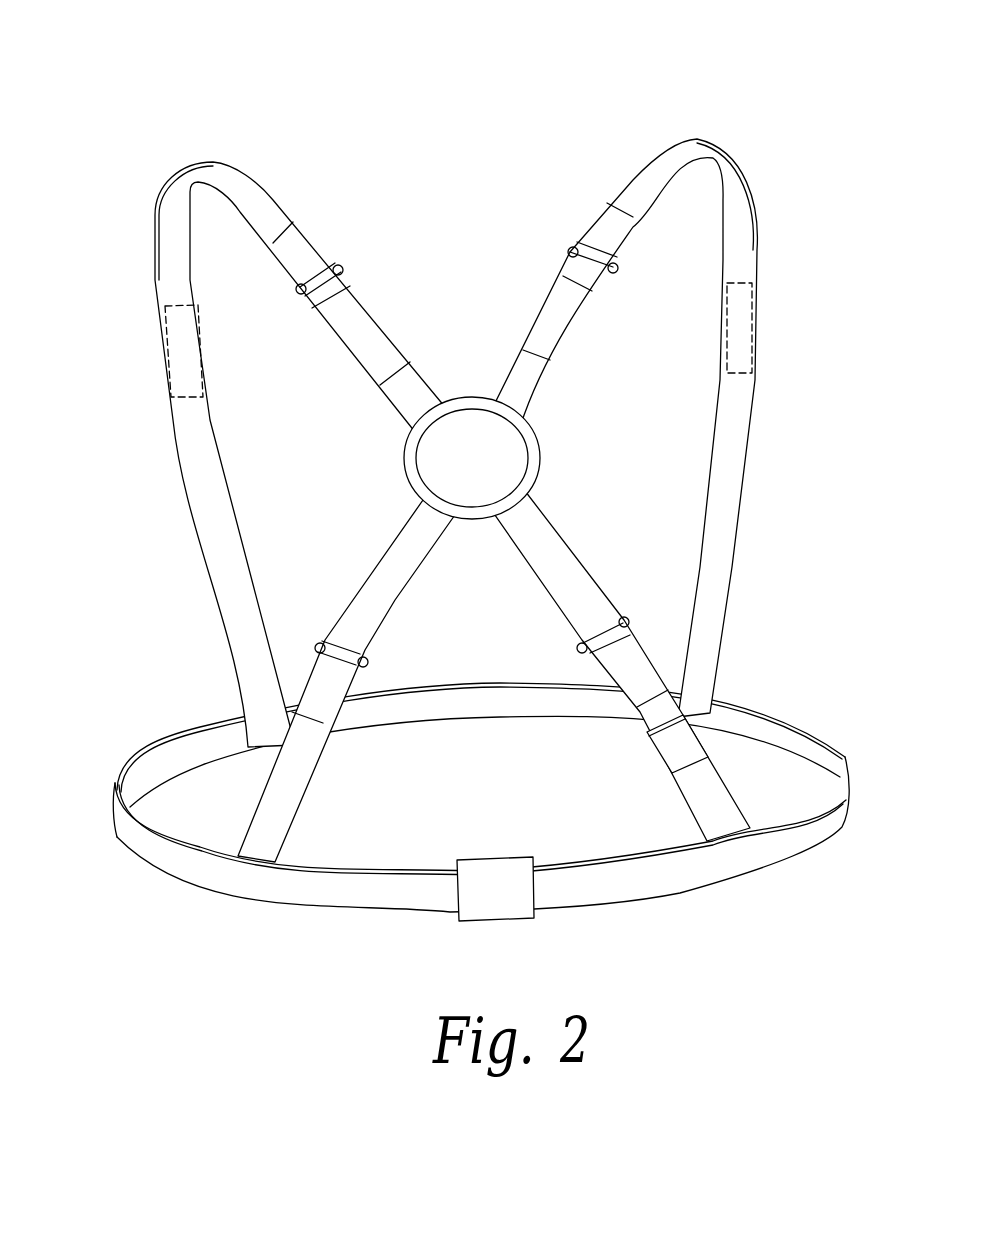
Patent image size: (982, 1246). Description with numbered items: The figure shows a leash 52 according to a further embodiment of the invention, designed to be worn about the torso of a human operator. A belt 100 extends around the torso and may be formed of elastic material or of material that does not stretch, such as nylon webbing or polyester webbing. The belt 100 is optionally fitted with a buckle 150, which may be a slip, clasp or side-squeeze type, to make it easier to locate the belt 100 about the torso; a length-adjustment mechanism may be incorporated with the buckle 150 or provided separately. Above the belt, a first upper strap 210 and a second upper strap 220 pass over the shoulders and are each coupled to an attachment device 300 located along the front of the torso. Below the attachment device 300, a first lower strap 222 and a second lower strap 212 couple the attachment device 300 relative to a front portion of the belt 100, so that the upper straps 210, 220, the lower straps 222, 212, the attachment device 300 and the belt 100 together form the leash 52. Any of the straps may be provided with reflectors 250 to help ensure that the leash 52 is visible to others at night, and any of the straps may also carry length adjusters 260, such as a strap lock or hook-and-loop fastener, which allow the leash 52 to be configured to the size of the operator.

The leash 52 is at (456, 471).
The belt 100 is at (677, 890).
The buckle 150 is at (660, 757).
The first upper strap 210 is at (178, 182).
The second lower strap 212 is at (638, 665).
The second upper strap 220 is at (713, 158).
The first lower strap 222 is at (320, 690).
The reflectors 250 is at (165, 338).
The length adjusters 260 is at (570, 252).
The attachment device 300 is at (541, 440).